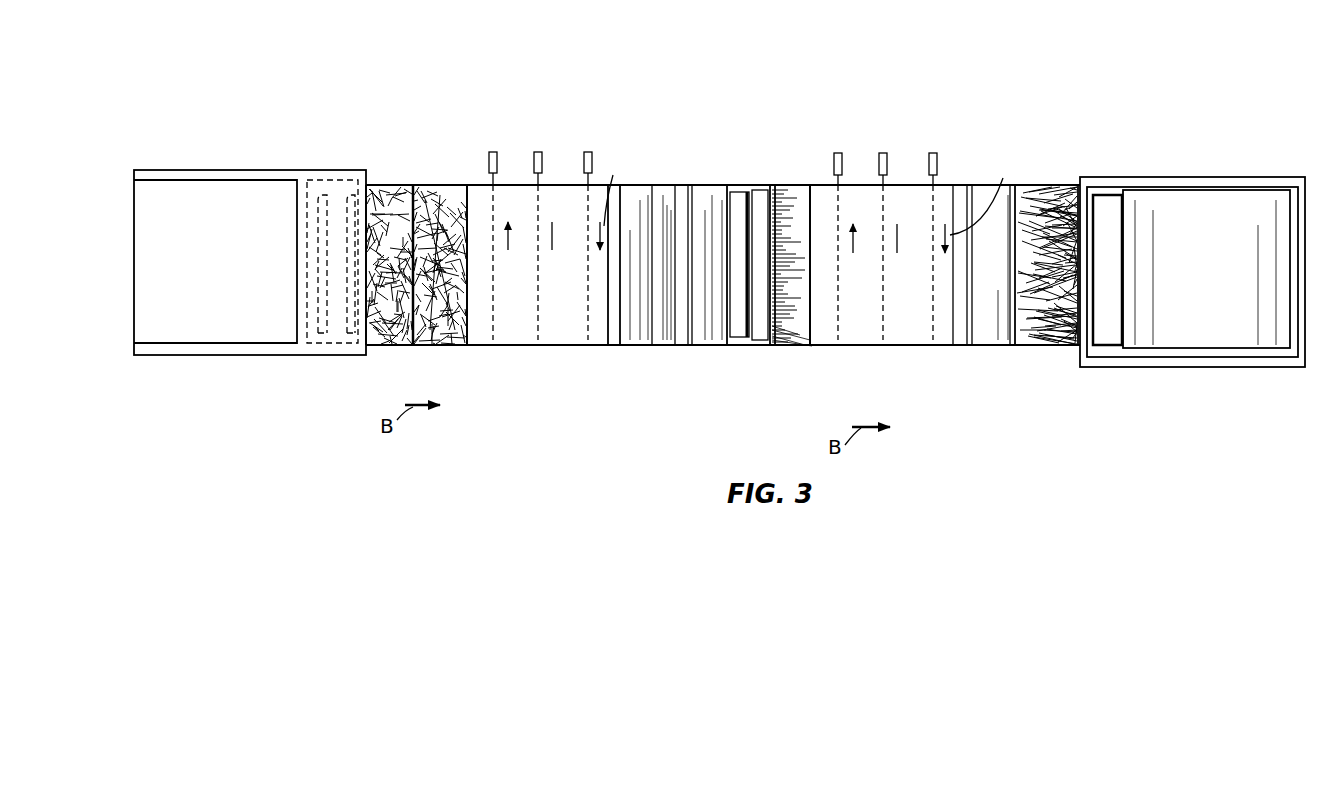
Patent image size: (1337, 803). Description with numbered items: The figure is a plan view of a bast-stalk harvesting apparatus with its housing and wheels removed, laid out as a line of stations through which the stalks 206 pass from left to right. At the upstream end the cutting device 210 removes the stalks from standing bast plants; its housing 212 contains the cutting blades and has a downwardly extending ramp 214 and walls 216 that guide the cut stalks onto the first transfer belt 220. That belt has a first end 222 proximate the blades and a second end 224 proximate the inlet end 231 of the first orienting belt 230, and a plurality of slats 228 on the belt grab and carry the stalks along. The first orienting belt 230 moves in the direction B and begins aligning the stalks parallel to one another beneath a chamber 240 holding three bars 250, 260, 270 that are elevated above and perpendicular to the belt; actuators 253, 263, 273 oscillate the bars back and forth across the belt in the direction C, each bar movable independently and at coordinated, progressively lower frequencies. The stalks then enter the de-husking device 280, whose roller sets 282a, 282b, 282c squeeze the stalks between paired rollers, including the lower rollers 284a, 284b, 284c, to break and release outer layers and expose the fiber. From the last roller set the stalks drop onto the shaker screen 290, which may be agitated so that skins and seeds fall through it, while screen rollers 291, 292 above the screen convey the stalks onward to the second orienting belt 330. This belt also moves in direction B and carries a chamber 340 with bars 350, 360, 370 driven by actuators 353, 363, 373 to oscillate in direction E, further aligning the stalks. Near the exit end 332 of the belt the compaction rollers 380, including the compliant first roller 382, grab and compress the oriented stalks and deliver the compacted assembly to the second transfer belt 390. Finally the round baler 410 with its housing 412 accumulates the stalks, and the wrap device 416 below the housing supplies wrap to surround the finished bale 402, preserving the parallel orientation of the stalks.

The stalks 206 is at (797, 205).
The cutting device 210 is at (224, 143).
The housing 212 is at (163, 165).
The ramp 214 is at (229, 251).
The walls 216 is at (180, 183).
The first transfer belt 220 is at (393, 185).
The first end 222 is at (305, 333).
The second end 224 is at (413, 345).
The slats 228 is at (318, 210).
The first orienting belt 230 is at (455, 185).
The inlet end 231 is at (440, 185).
The chamber 240 is at (544, 74).
The first bar 250 is at (497, 303).
The actuator 253 is at (498, 158).
The second bar 260 is at (543, 325).
The actuator 263 is at (541, 158).
The third bar 270 is at (588, 340).
The actuator 273 is at (590, 160).
The de-husking device 280 is at (670, 74).
The first roller set 282a is at (645, 168).
The second roller set 282b is at (679, 168).
The third roller set 282c is at (714, 168).
The first roller 284a is at (635, 333).
The first roller 284b is at (672, 333).
The first roller 284c is at (705, 303).
The shaker screen 290 is at (780, 265).
The first screen roller 291 is at (746, 200).
The second screen roller 292 is at (760, 200).
The second orienting belt 330 is at (797, 345).
The exit end 332 is at (958, 185).
The chamber 340 is at (900, 74).
The first bar 350 is at (838, 325).
The actuator 353 is at (840, 152).
The second bar 360 is at (882, 325).
The actuator 363 is at (882, 152).
The third bar 370 is at (930, 340).
The actuator 373 is at (932, 152).
The compaction rollers 380 is at (985, 363).
The first roller 382 is at (1014, 259).
The second transfer belt 390 is at (1035, 210).
The bale 402 is at (1246, 256).
The round baler 410 is at (1208, 256).
The housing 412 is at (1262, 177).
The wrap device 416 is at (1103, 330).